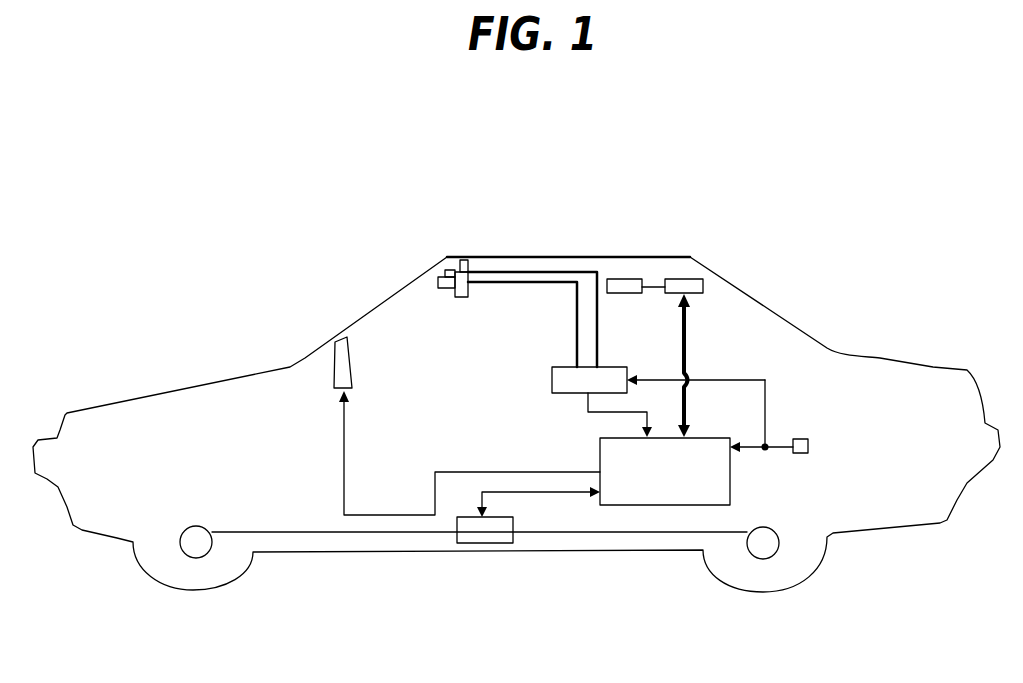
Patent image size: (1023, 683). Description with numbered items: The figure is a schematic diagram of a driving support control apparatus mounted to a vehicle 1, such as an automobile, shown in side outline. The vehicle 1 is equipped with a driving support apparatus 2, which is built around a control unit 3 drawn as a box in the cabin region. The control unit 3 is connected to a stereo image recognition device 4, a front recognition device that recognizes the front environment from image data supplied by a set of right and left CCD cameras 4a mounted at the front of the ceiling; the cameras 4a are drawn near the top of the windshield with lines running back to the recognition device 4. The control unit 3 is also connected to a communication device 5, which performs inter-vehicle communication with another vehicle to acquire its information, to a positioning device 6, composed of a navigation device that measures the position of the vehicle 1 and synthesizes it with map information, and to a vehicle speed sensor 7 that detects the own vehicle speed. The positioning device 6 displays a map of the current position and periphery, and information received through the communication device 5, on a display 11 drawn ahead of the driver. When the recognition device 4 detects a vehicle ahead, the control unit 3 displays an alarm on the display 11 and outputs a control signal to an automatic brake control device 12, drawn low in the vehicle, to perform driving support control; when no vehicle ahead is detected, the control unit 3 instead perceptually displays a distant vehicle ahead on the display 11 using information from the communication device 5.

The vehicle 1 is at (576, 182).
The driving support apparatus 2 is at (762, 330).
The control unit 3 is at (730, 489).
The stereo image recognition device 4 is at (616, 355).
The CCD cameras 4a is at (448, 256).
The communication device 5 is at (628, 278).
The positioning device 6 is at (688, 278).
The vehicle speed sensor 7 is at (808, 447).
The display 11 is at (333, 367).
The automatic brake control device 12 is at (480, 544).